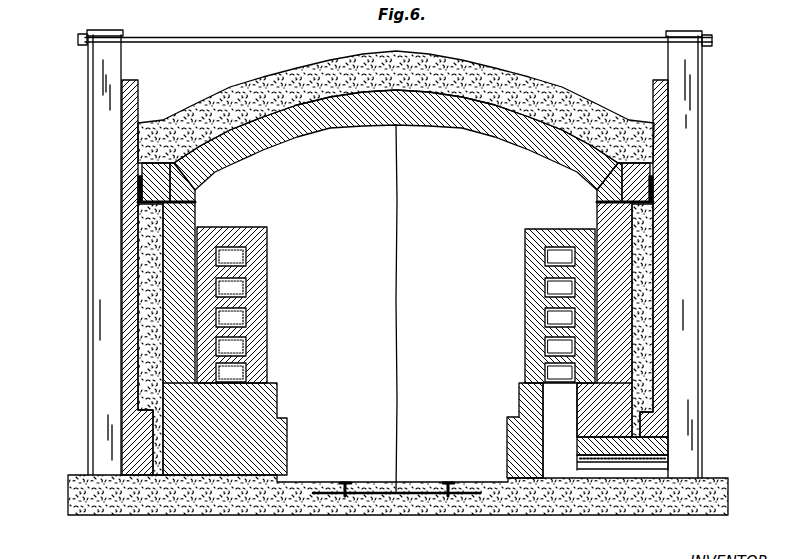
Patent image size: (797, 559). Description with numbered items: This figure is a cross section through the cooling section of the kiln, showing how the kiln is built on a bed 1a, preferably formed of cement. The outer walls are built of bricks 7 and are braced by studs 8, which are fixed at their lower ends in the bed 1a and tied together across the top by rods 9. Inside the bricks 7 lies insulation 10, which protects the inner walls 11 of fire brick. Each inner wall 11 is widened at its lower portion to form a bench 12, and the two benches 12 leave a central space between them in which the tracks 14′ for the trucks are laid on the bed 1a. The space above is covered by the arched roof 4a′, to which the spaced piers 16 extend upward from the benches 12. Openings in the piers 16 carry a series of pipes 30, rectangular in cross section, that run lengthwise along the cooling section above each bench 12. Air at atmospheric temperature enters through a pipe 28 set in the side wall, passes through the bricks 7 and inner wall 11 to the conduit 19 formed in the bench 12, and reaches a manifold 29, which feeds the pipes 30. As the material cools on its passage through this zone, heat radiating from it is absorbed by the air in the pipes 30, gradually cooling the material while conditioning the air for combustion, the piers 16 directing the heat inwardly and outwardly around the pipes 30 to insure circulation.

The bed 1a is at (208, 510).
The roof 4a′ is at (396, 271).
The bricks 7 is at (125, 375).
The studs 8 is at (107, 318).
The rods 9 is at (209, 38).
The insulation 10 is at (142, 342).
The inner walls 11 is at (170, 272).
The benches 12 is at (266, 400).
The tracks 14′ is at (345, 482).
The piers 16 is at (266, 238).
The conduit 19 is at (560, 430).
The pipe 28 is at (682, 458).
The manifold 29 is at (527, 365).
The pipes 30 is at (233, 288).